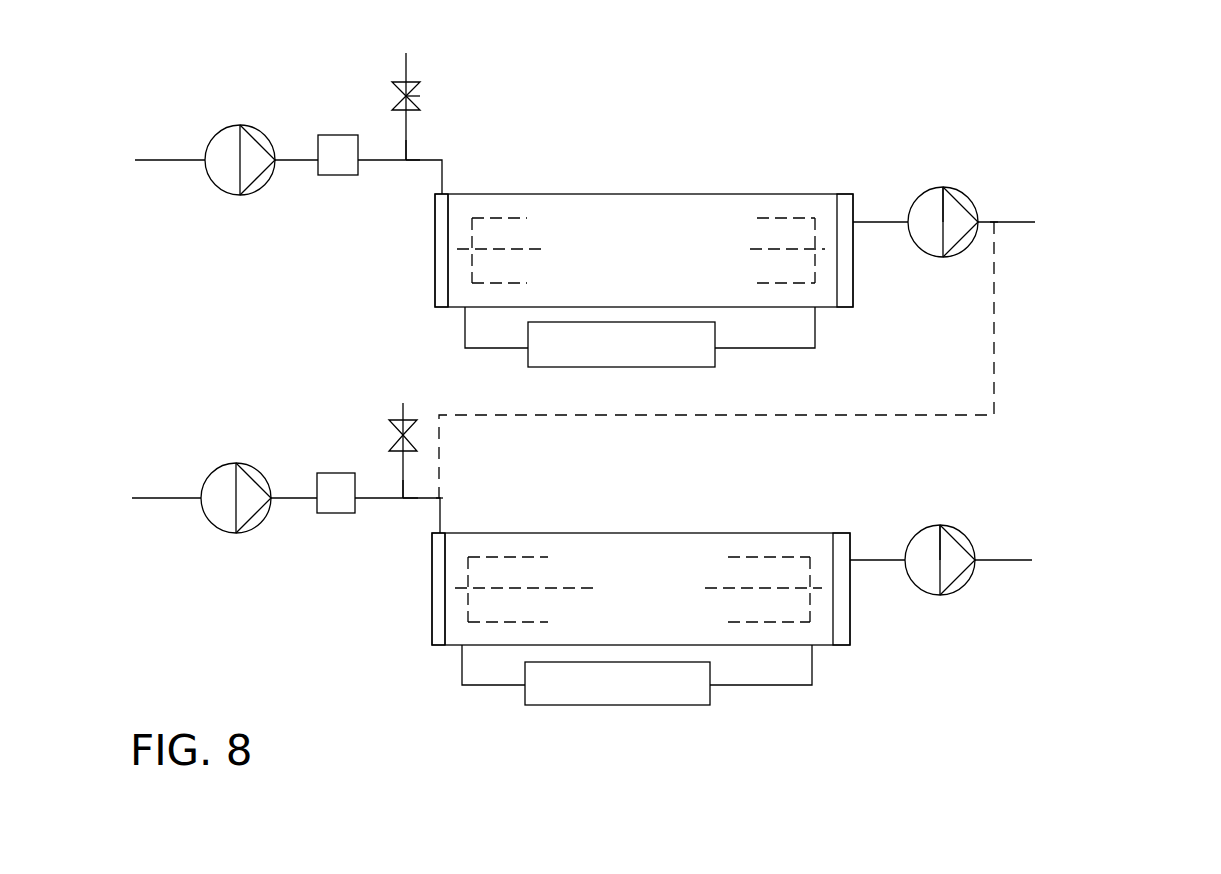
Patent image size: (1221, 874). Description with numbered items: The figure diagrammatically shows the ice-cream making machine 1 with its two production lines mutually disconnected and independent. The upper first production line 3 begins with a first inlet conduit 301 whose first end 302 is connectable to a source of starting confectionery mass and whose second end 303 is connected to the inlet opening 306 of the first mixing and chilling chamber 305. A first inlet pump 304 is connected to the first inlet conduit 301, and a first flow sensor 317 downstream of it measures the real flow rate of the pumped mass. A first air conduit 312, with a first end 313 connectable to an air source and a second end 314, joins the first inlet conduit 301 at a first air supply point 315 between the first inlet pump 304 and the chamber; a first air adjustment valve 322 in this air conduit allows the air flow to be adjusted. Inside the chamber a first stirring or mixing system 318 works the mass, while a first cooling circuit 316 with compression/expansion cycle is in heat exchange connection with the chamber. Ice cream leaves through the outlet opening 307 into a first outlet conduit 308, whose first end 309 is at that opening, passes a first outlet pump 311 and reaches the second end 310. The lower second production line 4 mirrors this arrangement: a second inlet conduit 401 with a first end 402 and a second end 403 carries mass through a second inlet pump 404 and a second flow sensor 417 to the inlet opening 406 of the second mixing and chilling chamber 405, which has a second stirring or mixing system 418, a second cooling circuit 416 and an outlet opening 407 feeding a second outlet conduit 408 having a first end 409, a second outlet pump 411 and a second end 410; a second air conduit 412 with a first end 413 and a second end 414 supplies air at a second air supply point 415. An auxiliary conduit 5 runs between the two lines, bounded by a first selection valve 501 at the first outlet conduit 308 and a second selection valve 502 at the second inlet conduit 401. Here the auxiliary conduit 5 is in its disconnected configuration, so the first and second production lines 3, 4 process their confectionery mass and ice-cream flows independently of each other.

The ice-cream making machine 1 is at (1140, 212).
The first production line 3 is at (697, 158).
The second production line 4 is at (829, 693).
The auxiliary conduit 5 is at (994, 328).
The first inlet conduit 301 is at (397, 162).
The first end of first inlet conduit 302 is at (163, 160).
The second end of first inlet conduit 303 is at (445, 194).
The first inlet pump 304 is at (243, 125).
The first mixing and chilling chamber 305 is at (615, 202).
The inlet opening of first mixing and chilling chamber 306 is at (433, 192).
The outlet opening of first mixing and chilling chamber 307 is at (855, 220).
The first outlet conduit 308 is at (895, 222).
The first end of first outlet conduit 309 is at (857, 228).
The second end of first outlet conduit 310 is at (1035, 222).
The first outlet pump 311 is at (965, 188).
The first air conduit 312 is at (404, 80).
The first end of first air conduit 313 is at (407, 77).
The second end of first air conduit 314 is at (408, 150).
The first air supply point 315 is at (408, 158).
The first cooling circuit 316 is at (673, 365).
The first flow sensor 317 is at (340, 135).
The first stirring or mixing system 318 is at (760, 217).
The first air adjustment valve 322 is at (422, 78).
The second inlet conduit 401 is at (418, 500).
The first end of second inlet conduit 402 is at (163, 498).
The second end of second inlet conduit 403 is at (445, 533).
The second inlet pump 404 is at (238, 463).
The second mixing and chilling chamber 405 is at (640, 537).
The inlet opening of second mixing and chilling chamber 406 is at (432, 548).
The outlet opening of second mixing and chilling chamber 407 is at (852, 560).
The second outlet conduit 408 is at (885, 562).
The first end of second outlet conduit 409 is at (852, 562).
The second end of second outlet conduit 410 is at (1032, 560).
The second outlet pump 411 is at (960, 522).
The second air conduit 412 is at (395, 418).
The first end of second air conduit 413 is at (403, 405).
The second end of second air conduit 414 is at (400, 492).
The second air supply point 415 is at (405, 497).
The second cooling circuit 416 is at (686, 698).
The second flow sensor 417 is at (335, 513).
The second stirring or mixing system 418 is at (760, 557).
The first selection valve 501 is at (995, 227).
The second selection valve 502 is at (440, 496).